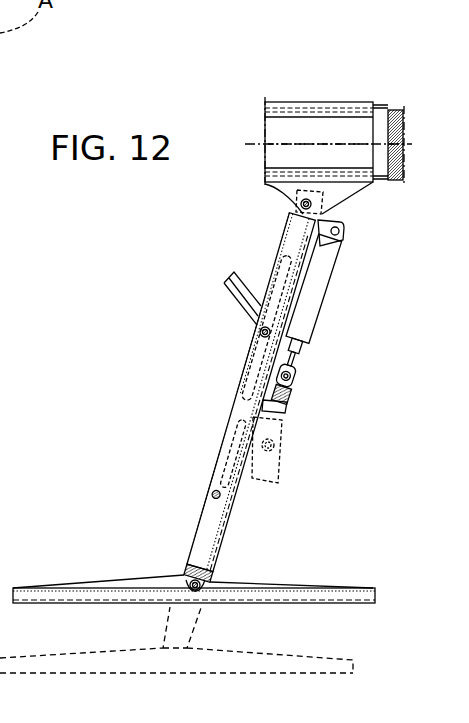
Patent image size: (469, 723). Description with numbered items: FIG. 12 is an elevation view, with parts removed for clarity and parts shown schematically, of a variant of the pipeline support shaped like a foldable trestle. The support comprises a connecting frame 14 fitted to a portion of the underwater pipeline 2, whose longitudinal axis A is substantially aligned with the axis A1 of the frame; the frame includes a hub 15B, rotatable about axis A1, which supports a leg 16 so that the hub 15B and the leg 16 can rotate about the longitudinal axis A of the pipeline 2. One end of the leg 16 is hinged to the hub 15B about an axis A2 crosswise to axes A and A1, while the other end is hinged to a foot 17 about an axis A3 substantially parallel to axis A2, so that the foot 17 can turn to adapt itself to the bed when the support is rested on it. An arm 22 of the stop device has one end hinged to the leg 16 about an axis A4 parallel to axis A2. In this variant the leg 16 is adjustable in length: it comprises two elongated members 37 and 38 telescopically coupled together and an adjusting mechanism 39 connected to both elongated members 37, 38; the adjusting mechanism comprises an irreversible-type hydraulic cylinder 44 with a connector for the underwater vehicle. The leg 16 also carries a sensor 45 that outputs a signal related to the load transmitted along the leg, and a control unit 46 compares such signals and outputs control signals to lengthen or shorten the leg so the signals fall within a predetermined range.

The connecting frame 14 is at (262, 76).
The hub 15B is at (345, 96).
The underwater pipeline 2 is at (395, 110).
The longitudinal axis A is at (393, 181).
The axis A1 is at (303, 140).
The axis A2 is at (264, 197).
The axis A3 is at (207, 599).
The axis A4 is at (258, 334).
The leg 16 is at (211, 425).
The elongated member 37 is at (293, 240).
The elongated member 38 is at (197, 533).
The arm 22 is at (247, 305).
The hydraulic cylinder 44 is at (320, 278).
The adjusting mechanism 39 is at (318, 362).
The control unit 46 is at (186, 566).
The sensor 45 is at (210, 571).
The foot 17 is at (72, 591).